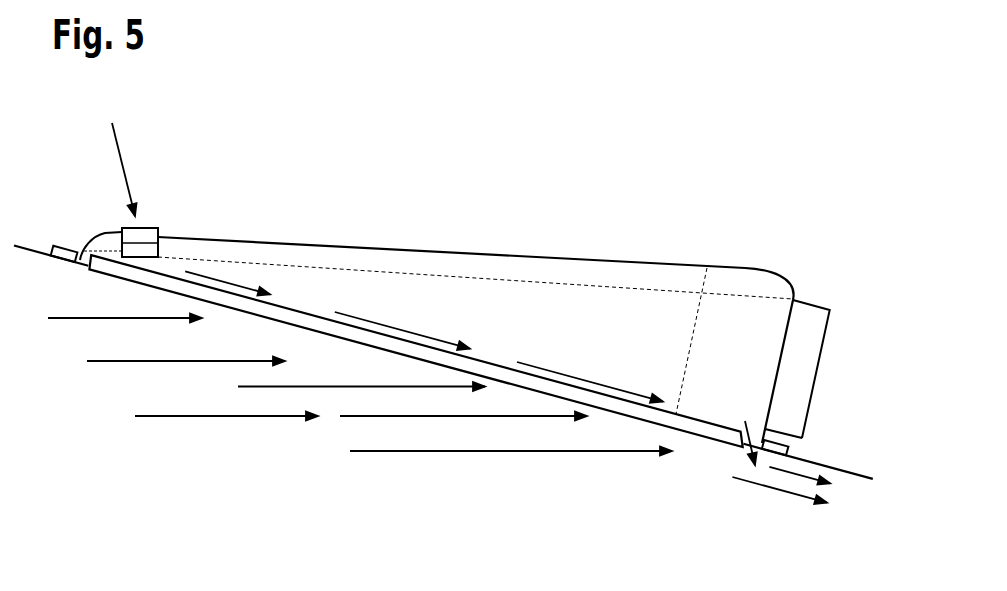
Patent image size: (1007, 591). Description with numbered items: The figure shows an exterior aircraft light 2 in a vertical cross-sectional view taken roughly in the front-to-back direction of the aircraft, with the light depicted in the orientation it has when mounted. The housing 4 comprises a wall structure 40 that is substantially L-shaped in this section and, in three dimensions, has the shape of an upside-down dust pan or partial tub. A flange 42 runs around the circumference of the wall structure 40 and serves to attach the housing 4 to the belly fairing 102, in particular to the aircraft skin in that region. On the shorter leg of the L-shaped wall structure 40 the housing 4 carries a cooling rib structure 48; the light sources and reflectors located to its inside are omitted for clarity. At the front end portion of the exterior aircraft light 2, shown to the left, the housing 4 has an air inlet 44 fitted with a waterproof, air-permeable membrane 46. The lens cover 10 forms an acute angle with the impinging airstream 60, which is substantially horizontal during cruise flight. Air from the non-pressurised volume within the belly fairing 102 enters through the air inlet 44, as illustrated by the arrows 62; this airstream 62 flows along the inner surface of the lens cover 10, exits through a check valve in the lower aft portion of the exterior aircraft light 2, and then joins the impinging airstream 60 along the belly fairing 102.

The exterior aircraft light 2 is at (676, 148).
The housing 4 is at (606, 304).
The lens cover 10 is at (694, 428).
The wall structure 40 is at (744, 269).
The flange 42 is at (68, 247).
The air inlet 44 is at (173, 214).
The waterproof, air-permeable membrane 46 is at (143, 243).
The cooling rib structure 48 is at (805, 345).
The impinging airstream 60 is at (232, 418).
The airstream through the exterior aircraft light 62 is at (113, 137).
The belly fairing 102 is at (857, 480).